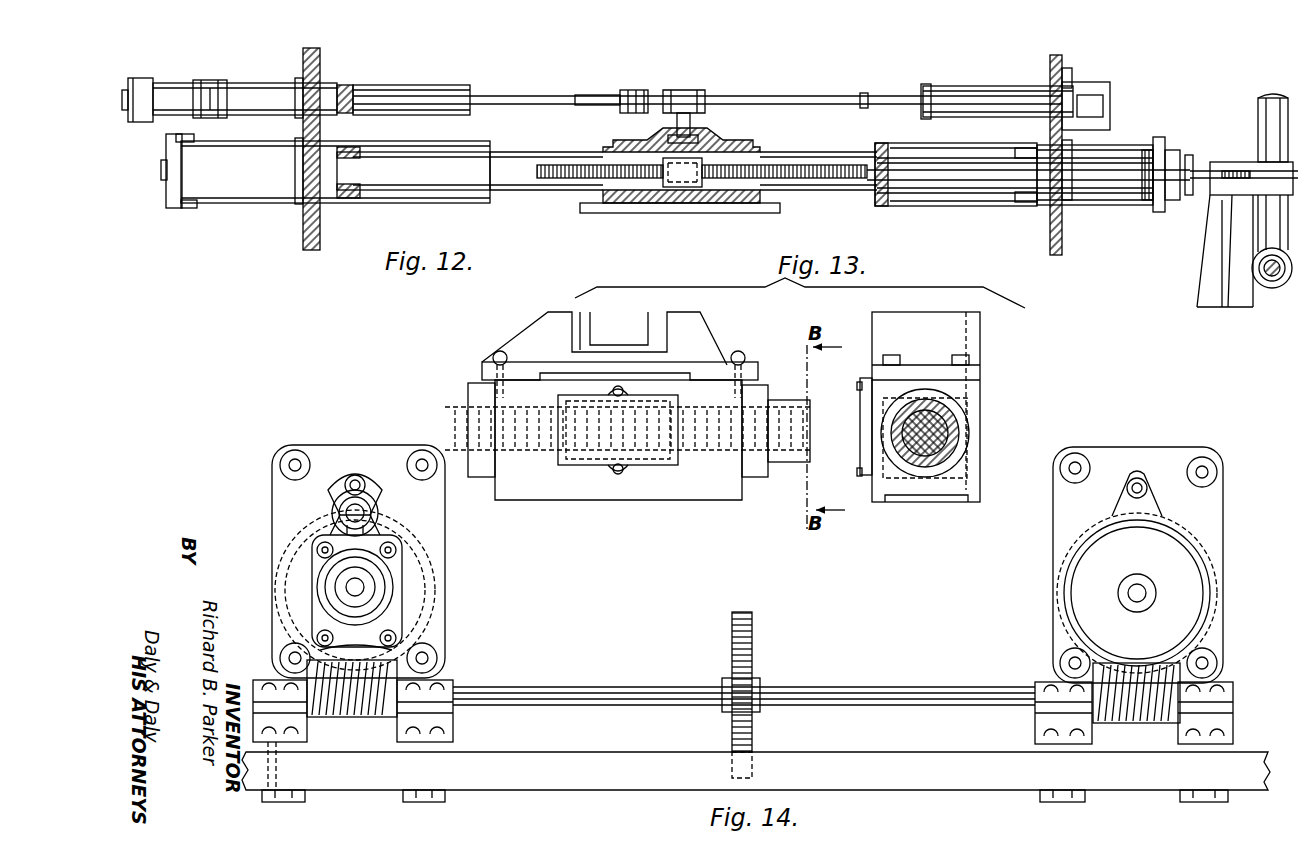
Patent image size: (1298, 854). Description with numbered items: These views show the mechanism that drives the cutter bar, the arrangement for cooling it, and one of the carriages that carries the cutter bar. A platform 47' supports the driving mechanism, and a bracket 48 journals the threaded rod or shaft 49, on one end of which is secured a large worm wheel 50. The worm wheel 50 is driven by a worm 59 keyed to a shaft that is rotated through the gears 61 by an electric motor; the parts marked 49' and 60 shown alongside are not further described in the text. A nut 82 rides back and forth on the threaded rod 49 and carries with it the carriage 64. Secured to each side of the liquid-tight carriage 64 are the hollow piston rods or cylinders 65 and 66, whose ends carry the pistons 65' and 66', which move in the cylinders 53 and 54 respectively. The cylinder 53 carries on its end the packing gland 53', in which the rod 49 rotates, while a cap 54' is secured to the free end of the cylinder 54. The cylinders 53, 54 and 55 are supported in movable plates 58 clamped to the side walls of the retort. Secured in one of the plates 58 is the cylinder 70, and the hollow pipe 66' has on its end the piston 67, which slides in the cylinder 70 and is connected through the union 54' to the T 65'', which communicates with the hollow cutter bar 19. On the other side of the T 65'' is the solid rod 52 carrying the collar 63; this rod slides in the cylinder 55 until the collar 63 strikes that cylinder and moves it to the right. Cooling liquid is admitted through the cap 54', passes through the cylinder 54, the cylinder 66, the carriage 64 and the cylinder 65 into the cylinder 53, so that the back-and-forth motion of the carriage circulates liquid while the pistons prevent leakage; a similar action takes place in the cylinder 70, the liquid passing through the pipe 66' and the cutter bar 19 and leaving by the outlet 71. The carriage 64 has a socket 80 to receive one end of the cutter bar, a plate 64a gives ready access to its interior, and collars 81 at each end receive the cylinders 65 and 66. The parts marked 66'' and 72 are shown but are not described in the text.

In FIG. 12, the cutter bar 19 is at (700, 138).
In FIG. 14, the platform 47' is at (756, 772).
In FIG. 12, the bracket 48 is at (1210, 296).
In FIG. 14, the bracket 48 is at (454, 712).
In FIG. 12, the threaded rod 49 is at (956, 187).
In FIG. 13, the threaded rod 49 is at (858, 461).
In FIG. 14, the threaded rod 49 is at (749, 602).
In FIG. 13, the tube end portion 49' is at (498, 439).
In FIG. 12, the worm wheel 50 is at (1262, 98).
In FIG. 14, the worm wheel 50 is at (420, 637).
In FIG. 12, the solid rod 52 is at (800, 88).
In FIG. 12, the cylinder 53 is at (1095, 186).
In FIG. 12, the packing gland 53' is at (1180, 158).
In FIG. 14, the packing gland 53' is at (407, 585).
In FIG. 12, the cylinder 54 is at (325, 179).
In FIG. 12, the cap 54' is at (410, 143).
In FIG. 12, the cylinder 55 is at (998, 87).
In FIG. 14, the cylinder 55 is at (376, 506).
In FIG. 12, the movable plates 58 is at (310, 252).
In FIG. 14, the movable plates 58 is at (445, 515).
In FIG. 12, the worm 59 is at (1272, 290).
In FIG. 14, the worm 59 is at (352, 718).
In FIG. 14, the shaft 60 is at (570, 688).
In FIG. 14, the gears 61 is at (752, 672).
In FIG. 12, the collar 63 is at (870, 93).
In FIG. 12, the carriage 64 is at (740, 142).
In FIG. 13, the carriage 64 is at (687, 500).
In FIG. 13, the plate 64a is at (601, 466).
In FIG. 12, the hollow piston rod 65 is at (863, 150).
In FIG. 13, the hollow piston rod 65 is at (735, 459).
In FIG. 12, the piston 65' is at (1017, 190).
In FIG. 12, the T 65'' is at (706, 94).
In FIG. 12, the hollow piston rod 66 is at (821, 182).
In FIG. 12, the hollow pipe 66' is at (586, 83).
In FIG. 12, the inner tube 66'' is at (413, 188).
In FIG. 12, the piston 67 is at (342, 85).
In FIG. 12, the cylinder 70 is at (432, 85).
In FIG. 12, the outlet 71 is at (140, 79).
In FIG. 12, the end fitting 72 is at (1108, 88).
In FIG. 13, the socket 80 is at (648, 337).
In FIG. 13, the collars 81 is at (770, 382).
In FIG. 12, the nut 82 is at (688, 206).
In FIG. 13, the nut 82 is at (652, 470).